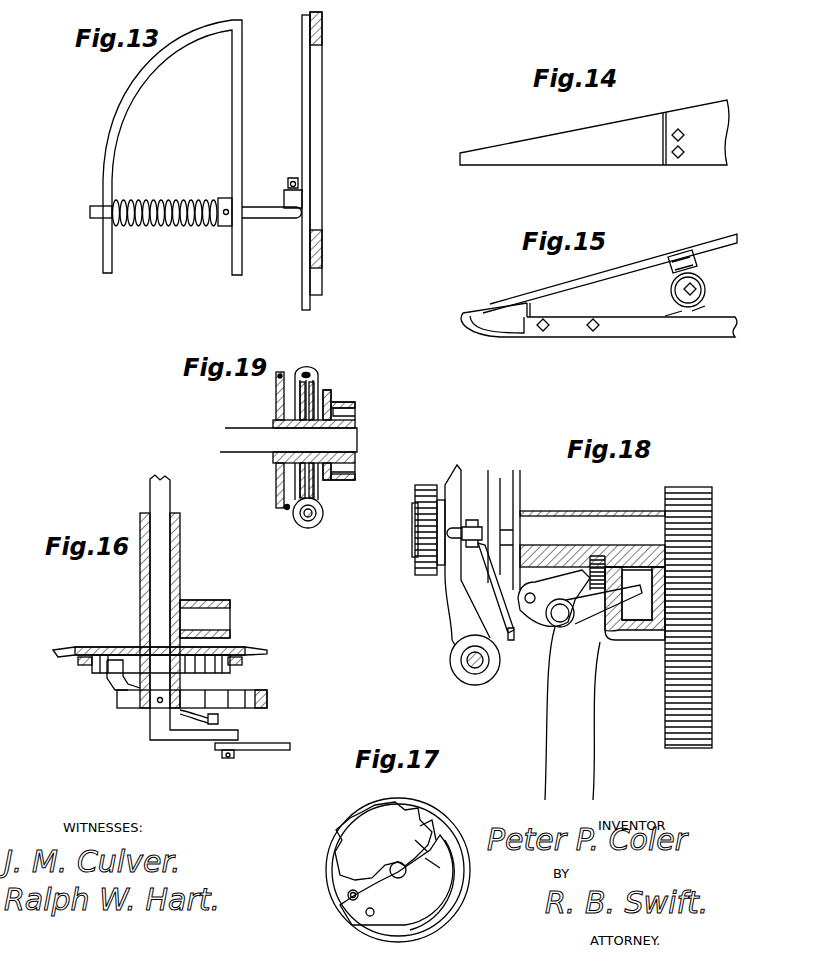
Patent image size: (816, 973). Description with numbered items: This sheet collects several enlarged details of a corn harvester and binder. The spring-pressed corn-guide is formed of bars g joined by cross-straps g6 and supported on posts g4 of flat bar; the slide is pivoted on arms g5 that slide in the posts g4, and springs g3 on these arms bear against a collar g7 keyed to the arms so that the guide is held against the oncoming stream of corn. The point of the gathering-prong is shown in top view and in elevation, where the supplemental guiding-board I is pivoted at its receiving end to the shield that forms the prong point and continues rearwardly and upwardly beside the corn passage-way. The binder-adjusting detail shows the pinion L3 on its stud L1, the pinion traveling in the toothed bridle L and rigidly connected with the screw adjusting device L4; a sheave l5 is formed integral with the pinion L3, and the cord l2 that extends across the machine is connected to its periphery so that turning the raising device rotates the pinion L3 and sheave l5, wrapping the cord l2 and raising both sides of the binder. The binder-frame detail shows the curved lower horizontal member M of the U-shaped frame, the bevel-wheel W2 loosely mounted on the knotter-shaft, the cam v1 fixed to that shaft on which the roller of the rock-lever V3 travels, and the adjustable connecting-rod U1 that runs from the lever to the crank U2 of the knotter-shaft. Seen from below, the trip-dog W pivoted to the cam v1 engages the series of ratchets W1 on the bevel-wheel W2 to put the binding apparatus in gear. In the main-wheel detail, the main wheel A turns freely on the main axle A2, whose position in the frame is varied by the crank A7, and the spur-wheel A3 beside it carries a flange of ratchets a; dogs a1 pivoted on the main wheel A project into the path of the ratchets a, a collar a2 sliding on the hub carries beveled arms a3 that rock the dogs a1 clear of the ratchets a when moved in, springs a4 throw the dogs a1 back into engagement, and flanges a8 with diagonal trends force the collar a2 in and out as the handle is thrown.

In FIG. 13, the bars g is at (318, 240).
In FIG. 13, the springs g3 is at (170, 228).
In FIG. 13, the posts g4 is at (235, 150).
In FIG. 13, the arms g5 is at (255, 214).
In FIG. 13, the cross-straps g6 is at (305, 125).
In FIG. 13, the collar g7 is at (222, 230).
In FIG. 14, the supplemental guiding-board I is at (700, 255).
In FIG. 19, the bridle L is at (338, 403).
In FIG. 19, the stud L1 is at (357, 438).
In FIG. 19, the pinion L3 is at (357, 468).
In FIG. 19, the adjusting device L4 is at (318, 519).
In FIG. 19, the cord l2 is at (287, 512).
In FIG. 19, the sheave l5 is at (277, 500).
In FIG. 16, the lower horizontal member M is at (231, 604).
In FIG. 16, the trip-dog W is at (110, 685).
In FIG. 17, the trip-dog W is at (440, 870).
In FIG. 16, the ratchets W1 is at (128, 650).
In FIG. 17, the ratchets W1 is at (346, 844).
In FIG. 16, the bevel-wheel W2 is at (58, 654).
In FIG. 16, the rock-lever V3 is at (270, 698).
In FIG. 16, the cam v1 is at (222, 693).
In FIG. 16, the connecting-rod U1 is at (262, 749).
In FIG. 16, the crank U2 is at (202, 737).
In FIG. 18, the main wheel A is at (572, 713).
In FIG. 18, the main axle A2 is at (592, 539).
In FIG. 18, the spur-wheel A3 is at (705, 640).
In FIG. 18, the crank A7 is at (480, 670).
In FIG. 18, the ratchets a is at (637, 624).
In FIG. 18, the dogs a1 is at (590, 612).
In FIG. 18, the collar a2 is at (523, 495).
In FIG. 18, the beveled arms a3 is at (578, 573).
In FIG. 18, the springs a4 is at (610, 556).
In FIG. 18, the flanges a8 is at (512, 638).